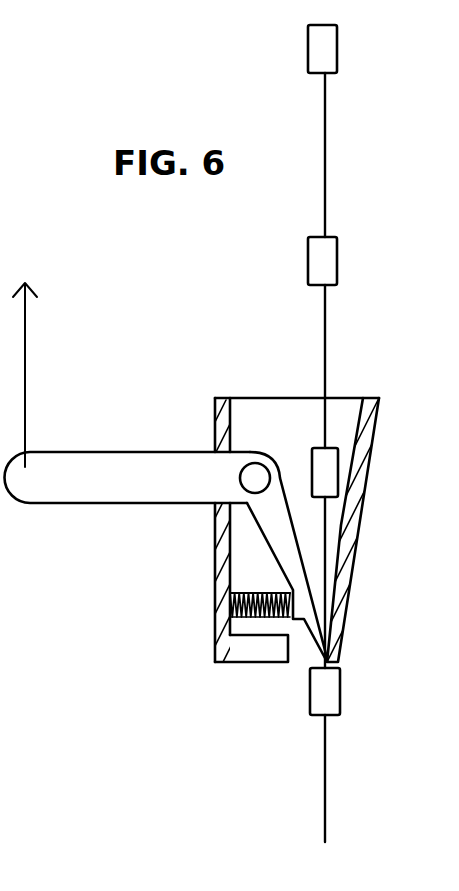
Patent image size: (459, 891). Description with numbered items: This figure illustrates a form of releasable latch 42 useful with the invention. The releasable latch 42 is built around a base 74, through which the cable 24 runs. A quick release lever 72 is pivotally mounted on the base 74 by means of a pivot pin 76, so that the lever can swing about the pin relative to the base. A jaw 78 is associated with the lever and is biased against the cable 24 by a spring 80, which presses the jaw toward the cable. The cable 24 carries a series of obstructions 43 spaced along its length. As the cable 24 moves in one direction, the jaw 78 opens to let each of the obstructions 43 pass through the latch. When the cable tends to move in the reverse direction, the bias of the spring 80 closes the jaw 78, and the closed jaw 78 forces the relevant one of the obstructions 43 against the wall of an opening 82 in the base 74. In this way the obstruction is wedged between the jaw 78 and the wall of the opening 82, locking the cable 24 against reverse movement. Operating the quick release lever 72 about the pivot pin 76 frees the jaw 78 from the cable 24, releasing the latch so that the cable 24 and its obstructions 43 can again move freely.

The cable 24 is at (326, 805).
The releasable latch 42 is at (232, 515).
The obstructions 43 is at (339, 264).
The quick release lever 72 is at (48, 505).
The base 74 is at (213, 413).
The pivot pin 76 is at (256, 478).
The jaw 78 is at (303, 613).
The spring 80 is at (210, 612).
The opening 82 is at (298, 663).